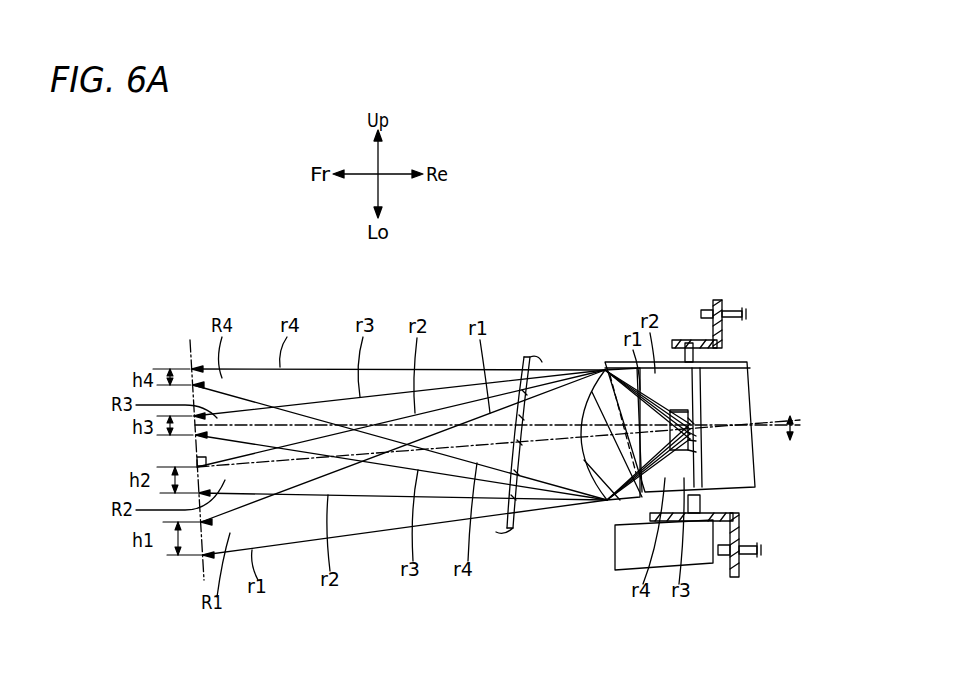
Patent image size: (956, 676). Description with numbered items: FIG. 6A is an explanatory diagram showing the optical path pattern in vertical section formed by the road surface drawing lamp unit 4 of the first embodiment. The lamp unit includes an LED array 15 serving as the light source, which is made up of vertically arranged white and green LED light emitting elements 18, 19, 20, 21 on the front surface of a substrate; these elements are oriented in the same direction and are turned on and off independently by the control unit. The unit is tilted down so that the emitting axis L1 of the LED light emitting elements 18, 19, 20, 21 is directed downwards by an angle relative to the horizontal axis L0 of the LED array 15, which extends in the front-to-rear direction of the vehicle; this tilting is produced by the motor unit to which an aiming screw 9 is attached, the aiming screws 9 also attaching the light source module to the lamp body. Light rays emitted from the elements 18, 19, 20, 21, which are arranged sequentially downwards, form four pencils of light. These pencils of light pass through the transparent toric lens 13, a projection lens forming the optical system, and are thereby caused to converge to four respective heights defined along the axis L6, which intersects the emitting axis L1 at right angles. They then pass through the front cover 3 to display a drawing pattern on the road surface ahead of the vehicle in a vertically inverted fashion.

The front cover 3 is at (518, 357).
The road surface drawing lamp unit 4 is at (744, 350).
The aiming screw 9 is at (747, 538).
The toric lens 13 is at (577, 370).
The LED array 15 is at (677, 400).
The LED light emitting element 18 is at (694, 422).
The LED light emitting element 19 is at (696, 436).
The LED light emitting element 20 is at (696, 441).
The LED light emitting element 21 is at (696, 452).
The horizontal axis L0 is at (437, 425).
The emitting axis L1 is at (763, 423).
The axis L6 is at (188, 350).